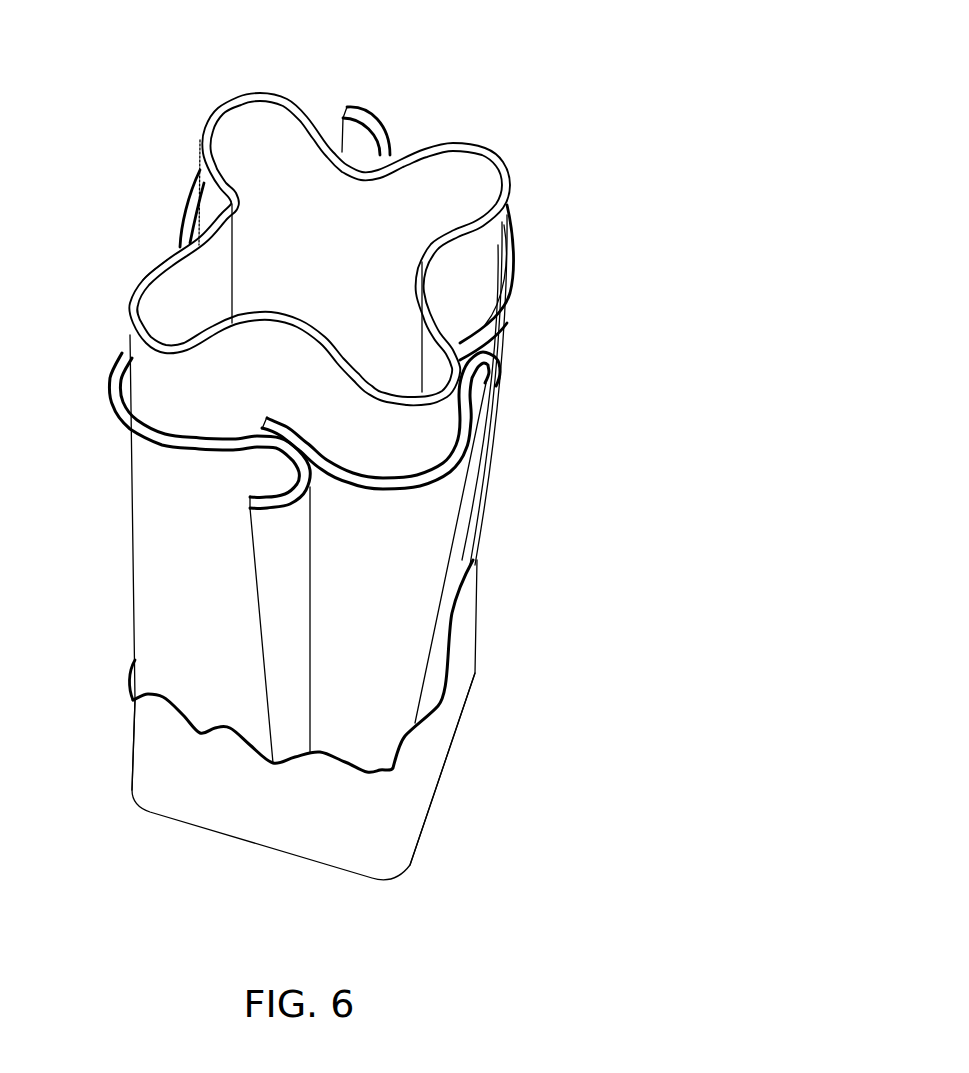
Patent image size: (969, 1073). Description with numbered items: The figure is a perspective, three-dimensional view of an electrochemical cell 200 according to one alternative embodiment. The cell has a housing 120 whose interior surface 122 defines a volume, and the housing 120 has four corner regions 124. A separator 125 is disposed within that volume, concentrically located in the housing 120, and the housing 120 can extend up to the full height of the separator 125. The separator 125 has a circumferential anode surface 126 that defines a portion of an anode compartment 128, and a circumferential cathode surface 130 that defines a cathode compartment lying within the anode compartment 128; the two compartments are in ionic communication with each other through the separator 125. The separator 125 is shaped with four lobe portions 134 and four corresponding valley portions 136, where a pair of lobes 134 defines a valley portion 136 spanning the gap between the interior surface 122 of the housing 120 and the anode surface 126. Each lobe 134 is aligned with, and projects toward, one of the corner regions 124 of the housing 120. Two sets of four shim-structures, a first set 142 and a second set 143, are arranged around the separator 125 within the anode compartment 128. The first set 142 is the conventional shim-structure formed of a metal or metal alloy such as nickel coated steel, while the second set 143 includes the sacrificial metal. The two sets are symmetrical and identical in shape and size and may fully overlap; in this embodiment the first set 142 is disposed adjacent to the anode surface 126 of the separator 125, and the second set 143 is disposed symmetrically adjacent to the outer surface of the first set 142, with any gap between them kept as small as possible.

The electrochemical cell 200 is at (520, 78).
The housing 120 is at (244, 825).
The interior surface 122 is at (200, 707).
The corner regions 124 is at (140, 745).
The separator 125 is at (201, 136).
The anode surface 126 is at (168, 279).
The anode compartment 128 is at (384, 294).
The cathode surface 130 is at (481, 257).
The lobe portions 134 is at (241, 92).
The valley portions 136 is at (423, 262).
The first set of shim-structures 142 is at (200, 436).
The second set of shim-structures 143 is at (213, 452).